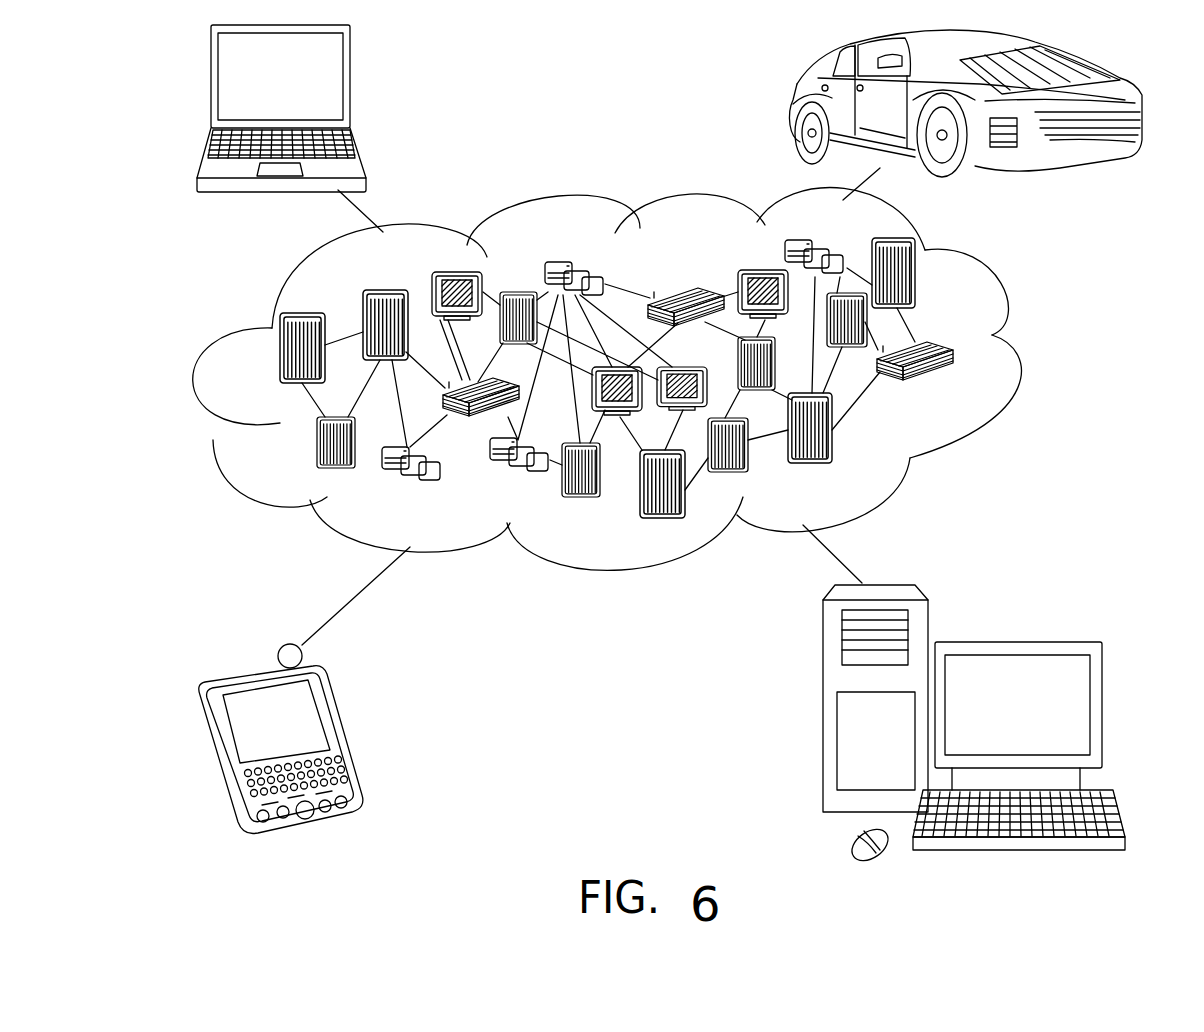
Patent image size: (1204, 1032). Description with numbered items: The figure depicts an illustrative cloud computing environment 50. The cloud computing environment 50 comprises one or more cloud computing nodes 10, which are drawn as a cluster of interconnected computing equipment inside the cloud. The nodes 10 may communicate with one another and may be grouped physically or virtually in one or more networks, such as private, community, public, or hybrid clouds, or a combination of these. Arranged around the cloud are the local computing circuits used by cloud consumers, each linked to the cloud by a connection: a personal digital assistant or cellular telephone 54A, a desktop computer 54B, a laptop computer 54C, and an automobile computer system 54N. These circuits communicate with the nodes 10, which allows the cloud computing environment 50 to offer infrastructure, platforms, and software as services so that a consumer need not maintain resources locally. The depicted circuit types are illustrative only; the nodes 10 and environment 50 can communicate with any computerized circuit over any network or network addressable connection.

The cloud computing node 10 is at (958, 387).
The cloud computing environment 50 is at (1020, 356).
The personal digital assistant or cellular telephone 54A is at (342, 738).
The desktop computer 54B is at (1013, 640).
The laptop computer 54C is at (350, 88).
The automobile computer system 54N is at (797, 105).